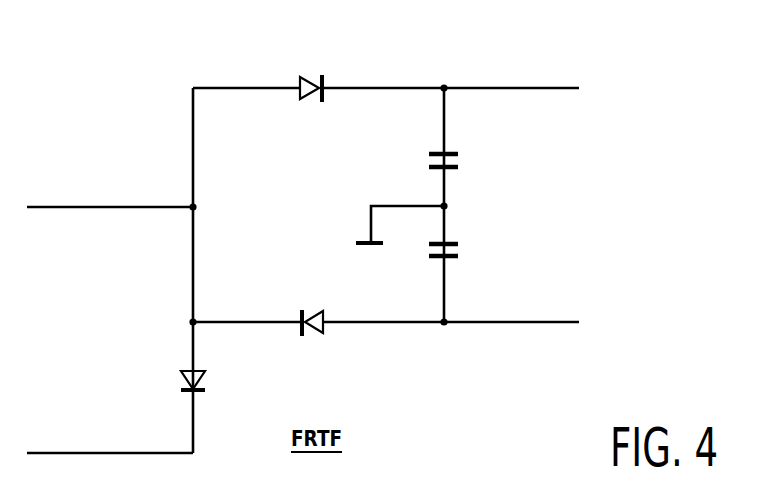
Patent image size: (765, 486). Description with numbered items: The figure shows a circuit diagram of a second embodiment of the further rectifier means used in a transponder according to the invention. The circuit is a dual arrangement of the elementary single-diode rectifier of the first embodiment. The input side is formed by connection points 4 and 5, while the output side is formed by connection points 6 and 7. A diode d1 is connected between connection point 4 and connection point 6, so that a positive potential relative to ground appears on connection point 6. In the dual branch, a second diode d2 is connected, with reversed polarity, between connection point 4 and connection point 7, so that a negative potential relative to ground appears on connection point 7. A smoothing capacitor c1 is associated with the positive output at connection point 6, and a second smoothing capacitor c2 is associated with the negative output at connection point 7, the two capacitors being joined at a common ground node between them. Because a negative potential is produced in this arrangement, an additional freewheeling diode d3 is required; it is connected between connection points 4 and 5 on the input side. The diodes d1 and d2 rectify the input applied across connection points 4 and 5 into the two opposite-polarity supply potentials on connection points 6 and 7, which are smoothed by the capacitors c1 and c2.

The connection point 4 is at (39, 207).
The connection point 5 is at (39, 453).
The connection point 6 is at (564, 88).
The connection point 7 is at (564, 322).
The diode d1 is at (310, 78).
The diode d2 is at (313, 311).
The additional freewheeling diode d3 is at (205, 378).
The smoothing capacitor c1 is at (456, 160).
The smoothing capacitor c2 is at (456, 247).